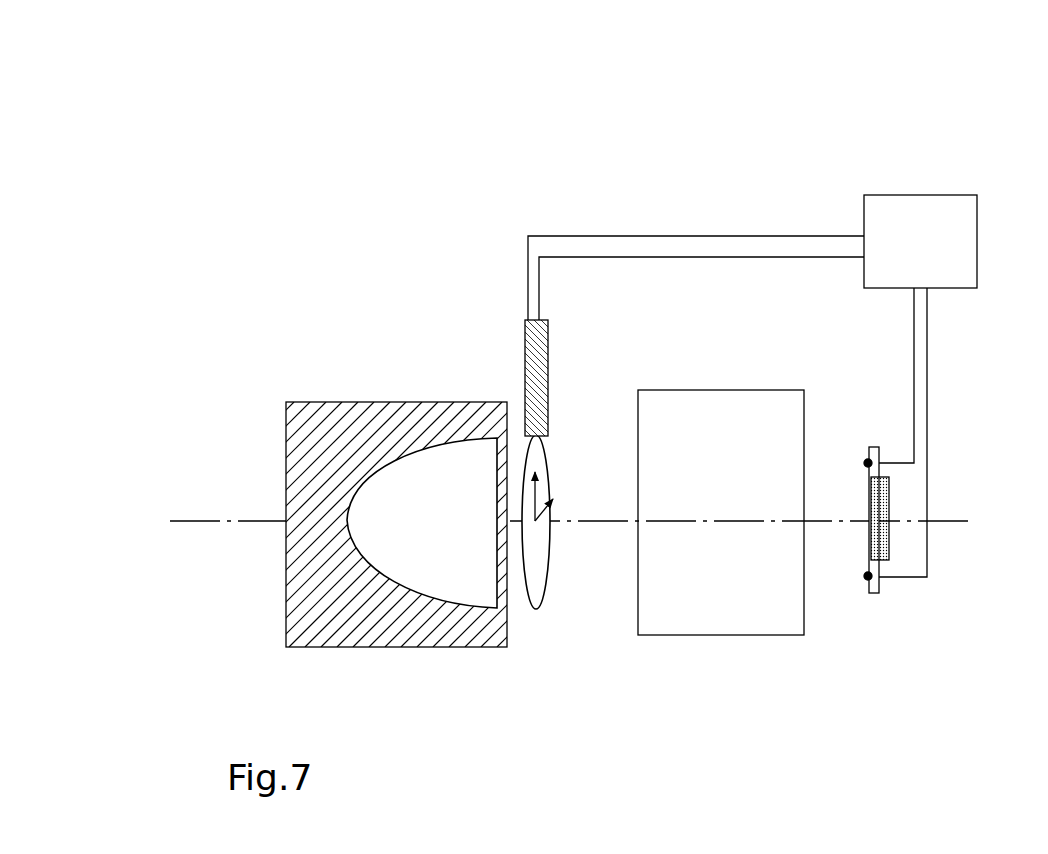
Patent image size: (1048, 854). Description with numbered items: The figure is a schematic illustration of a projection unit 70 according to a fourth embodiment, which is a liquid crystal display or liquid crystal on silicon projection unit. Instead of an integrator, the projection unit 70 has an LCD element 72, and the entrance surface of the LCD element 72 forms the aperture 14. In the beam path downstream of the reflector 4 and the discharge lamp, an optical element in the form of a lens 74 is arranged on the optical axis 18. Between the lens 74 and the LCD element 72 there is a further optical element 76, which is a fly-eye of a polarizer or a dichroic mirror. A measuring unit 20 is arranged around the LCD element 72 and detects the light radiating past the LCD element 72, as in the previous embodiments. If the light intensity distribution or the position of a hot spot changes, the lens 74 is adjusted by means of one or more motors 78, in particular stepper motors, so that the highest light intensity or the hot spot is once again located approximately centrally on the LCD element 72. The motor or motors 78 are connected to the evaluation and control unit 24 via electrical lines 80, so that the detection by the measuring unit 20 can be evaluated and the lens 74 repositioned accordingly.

The reflector 4 is at (435, 473).
The aperture 14 is at (858, 532).
The optical axis 18 is at (192, 521).
The measuring unit 20 is at (876, 450).
The evaluation and control unit 24 is at (935, 254).
The projection unit 70 is at (907, 112).
The LCD element 72 is at (889, 545).
The lens 74 is at (535, 606).
The optical element 76 is at (693, 636).
The motors 78 is at (548, 373).
The electrical lines 80 is at (677, 236).